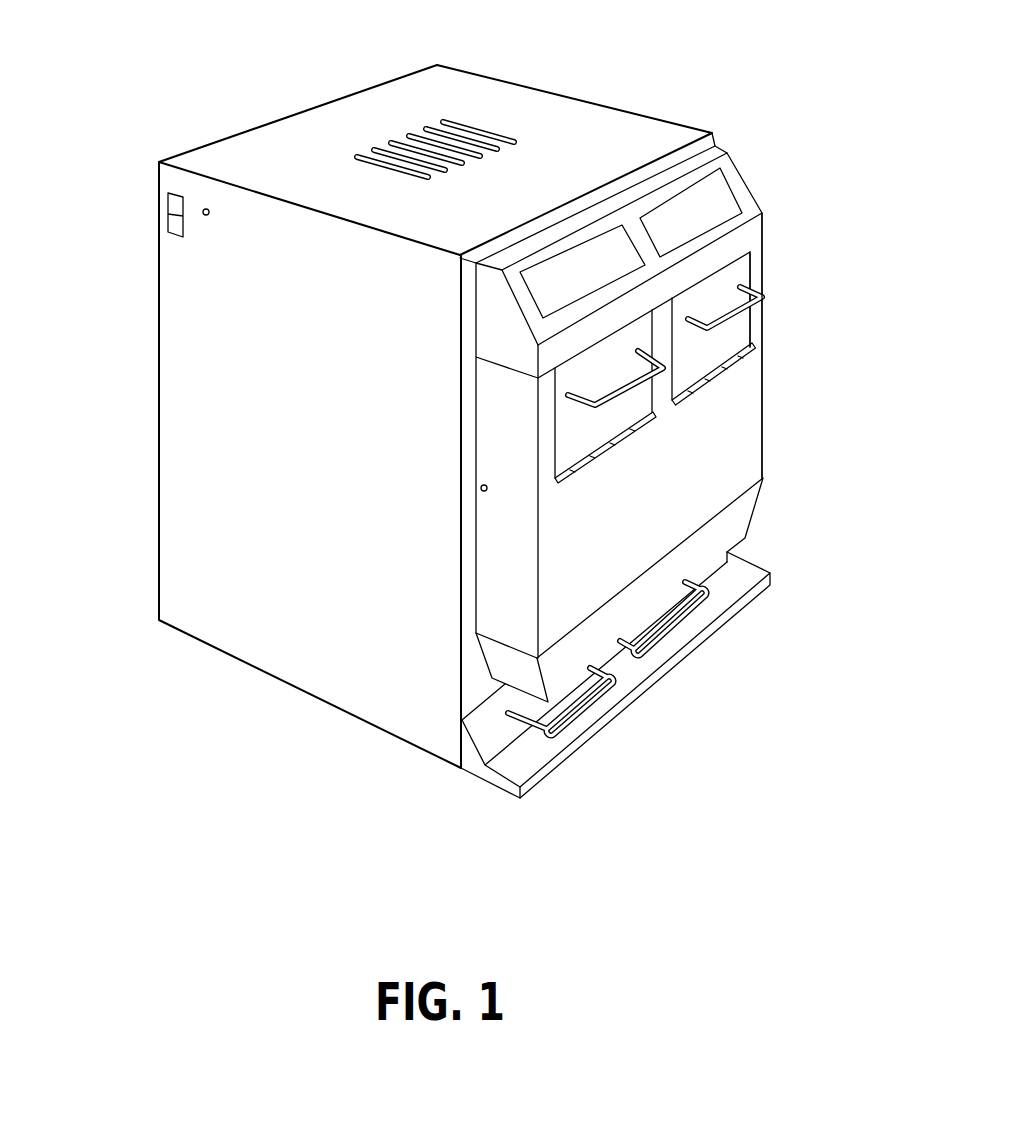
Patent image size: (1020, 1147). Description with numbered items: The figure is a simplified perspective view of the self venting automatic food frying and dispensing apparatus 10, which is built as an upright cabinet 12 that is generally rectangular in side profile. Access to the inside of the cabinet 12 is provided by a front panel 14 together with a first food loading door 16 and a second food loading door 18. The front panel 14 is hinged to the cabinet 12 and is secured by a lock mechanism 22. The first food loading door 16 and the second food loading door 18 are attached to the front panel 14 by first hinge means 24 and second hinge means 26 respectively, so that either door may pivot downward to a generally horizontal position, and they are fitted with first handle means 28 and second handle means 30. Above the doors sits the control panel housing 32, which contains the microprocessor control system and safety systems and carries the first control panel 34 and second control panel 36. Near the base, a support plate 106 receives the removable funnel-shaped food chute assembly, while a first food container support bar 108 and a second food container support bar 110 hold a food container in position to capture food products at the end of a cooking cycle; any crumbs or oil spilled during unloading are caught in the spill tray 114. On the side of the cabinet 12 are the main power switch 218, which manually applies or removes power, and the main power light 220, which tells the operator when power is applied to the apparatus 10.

The self venting automatic food frying and dispensing apparatus 10 is at (540, 80).
The upright cabinet 12 is at (195, 352).
The front panel 14 is at (735, 470).
The first food loading door 16 is at (623, 413).
The second food loading door 18 is at (732, 340).
The lock mechanism 22 is at (480, 489).
The first hinge means 24 is at (622, 443).
The second hinge means 26 is at (738, 368).
The first handle means 28 is at (640, 349).
The second handle means 30 is at (742, 286).
The control panel housing 32 is at (738, 187).
The first control panel 34 is at (578, 270).
The second control panel 36 is at (680, 207).
The support plate 106 is at (470, 693).
The first food container support bar 108 is at (607, 688).
The second food container support bar 110 is at (707, 595).
The spill tray 114 is at (540, 747).
The main power switch 218 is at (172, 200).
The main power light 220 is at (204, 208).